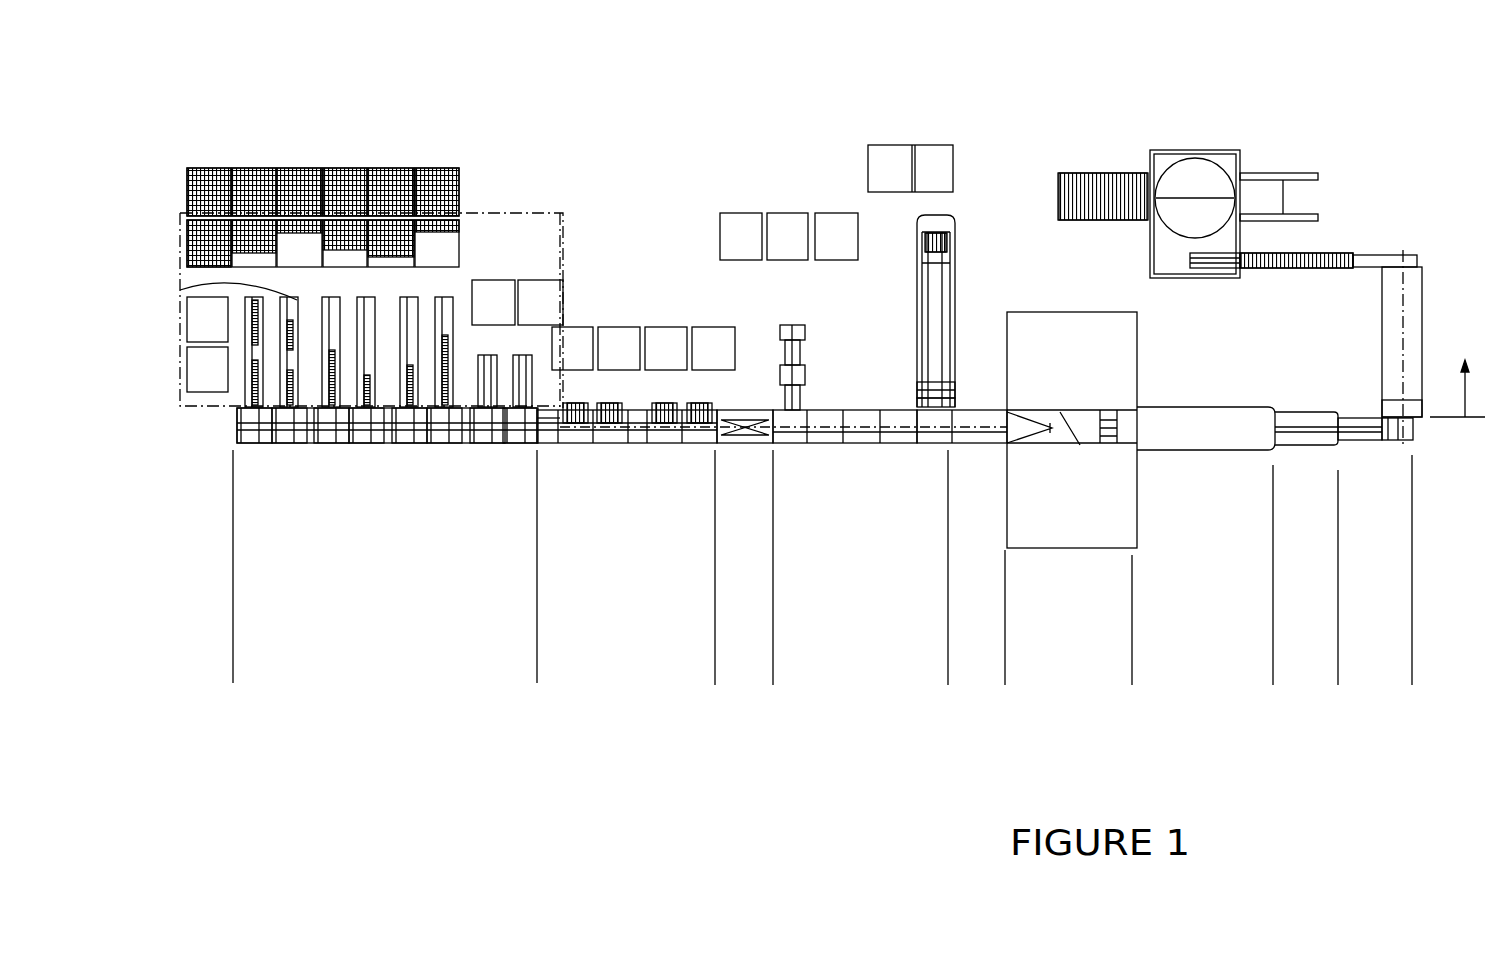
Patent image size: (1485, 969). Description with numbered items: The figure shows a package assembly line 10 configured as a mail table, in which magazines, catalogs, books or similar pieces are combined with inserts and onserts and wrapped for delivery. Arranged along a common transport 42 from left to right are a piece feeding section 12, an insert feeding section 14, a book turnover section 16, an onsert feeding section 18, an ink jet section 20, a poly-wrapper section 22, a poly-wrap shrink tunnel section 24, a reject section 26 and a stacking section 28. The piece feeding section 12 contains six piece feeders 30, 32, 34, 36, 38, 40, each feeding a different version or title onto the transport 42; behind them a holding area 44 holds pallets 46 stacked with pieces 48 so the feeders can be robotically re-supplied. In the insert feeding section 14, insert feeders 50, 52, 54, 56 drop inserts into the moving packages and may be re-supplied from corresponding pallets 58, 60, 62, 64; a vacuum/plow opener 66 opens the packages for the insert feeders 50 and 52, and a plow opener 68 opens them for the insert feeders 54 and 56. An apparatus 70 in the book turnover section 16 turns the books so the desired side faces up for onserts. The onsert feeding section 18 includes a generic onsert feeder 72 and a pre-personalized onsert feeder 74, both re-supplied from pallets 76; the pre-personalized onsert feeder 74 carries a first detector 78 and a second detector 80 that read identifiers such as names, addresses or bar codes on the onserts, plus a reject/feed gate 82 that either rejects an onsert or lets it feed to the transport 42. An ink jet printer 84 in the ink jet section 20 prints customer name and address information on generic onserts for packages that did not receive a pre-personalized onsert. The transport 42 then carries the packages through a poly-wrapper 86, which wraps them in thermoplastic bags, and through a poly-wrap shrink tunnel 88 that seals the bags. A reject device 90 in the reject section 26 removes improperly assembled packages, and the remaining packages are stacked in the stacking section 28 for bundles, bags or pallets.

The package assembly line 10 is at (982, 120).
The piece feeding section 12 is at (364, 648).
The insert feeding section 14 is at (662, 710).
The book turnover section 16 is at (752, 718).
The onsert feeding section 18 is at (845, 672).
The ink jet section 20 is at (970, 708).
The poly-wrapper section 22 is at (1060, 657).
The poly-wrap shrink tunnel section 24 is at (1202, 657).
The reject section 26 is at (1307, 657).
The stacking section 28 is at (1377, 657).
The piece feeder 30 is at (243, 382).
The piece feeder 32 is at (182, 288).
The piece feeder 34 is at (335, 302).
The piece feeder 36 is at (366, 300).
The piece feeder 38 is at (408, 300).
The piece feeder 40 is at (445, 295).
The transport 42 is at (262, 442).
The holding area 44 is at (323, 169).
The pallets 46 is at (200, 320).
The pieces 48 is at (243, 175).
The insert feeder 50 is at (568, 433).
The insert feeder 52 is at (603, 435).
The insert feeder 54 is at (655, 433).
The insert feeder 56 is at (700, 437).
The pallet 58 is at (580, 332).
The pallet 60 is at (613, 332).
The pallet 62 is at (662, 332).
The pallet 64 is at (703, 332).
The vacuum/plow opener 66 is at (548, 435).
The plow opener 68 is at (637, 417).
The apparatus for turning over the books 70 is at (743, 407).
The generic onsert feeder 72 is at (790, 323).
The pre-personalized onsert feeder 74 is at (933, 285).
The pallets 76 is at (833, 225).
The first detector 78 is at (945, 243).
The second detector 80 is at (918, 388).
The reject/feed gate 82 is at (920, 407).
The ink jet printer 84 is at (965, 410).
The poly-wrapper 86 is at (1075, 320).
The poly-wrap shrink tunnel 88 is at (1193, 417).
The reject device 90 is at (1300, 417).